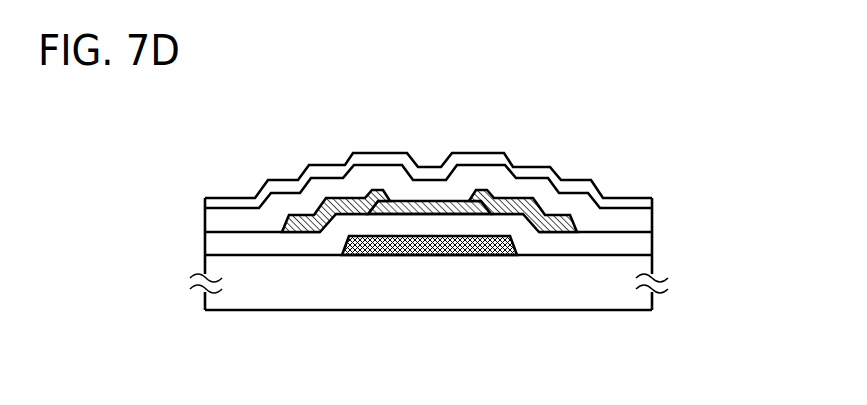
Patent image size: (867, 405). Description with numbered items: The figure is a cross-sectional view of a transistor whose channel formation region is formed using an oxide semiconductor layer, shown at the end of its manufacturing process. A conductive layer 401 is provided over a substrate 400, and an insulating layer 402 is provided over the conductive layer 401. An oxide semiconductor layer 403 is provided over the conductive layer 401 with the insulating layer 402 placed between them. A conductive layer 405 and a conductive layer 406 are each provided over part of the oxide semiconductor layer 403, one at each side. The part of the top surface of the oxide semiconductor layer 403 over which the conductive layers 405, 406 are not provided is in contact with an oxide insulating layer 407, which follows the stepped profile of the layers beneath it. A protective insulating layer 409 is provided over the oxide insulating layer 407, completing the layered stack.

The substrate 400 is at (263, 292).
The conductive layer 401 is at (443, 248).
The insulating layer 402 is at (521, 236).
The oxide semiconductor layer 403 is at (478, 207).
The conductive layer 405 is at (378, 192).
The conductive layer 406 is at (535, 210).
The oxide insulating layer 407 is at (253, 217).
The protective insulating layer 409 is at (312, 170).